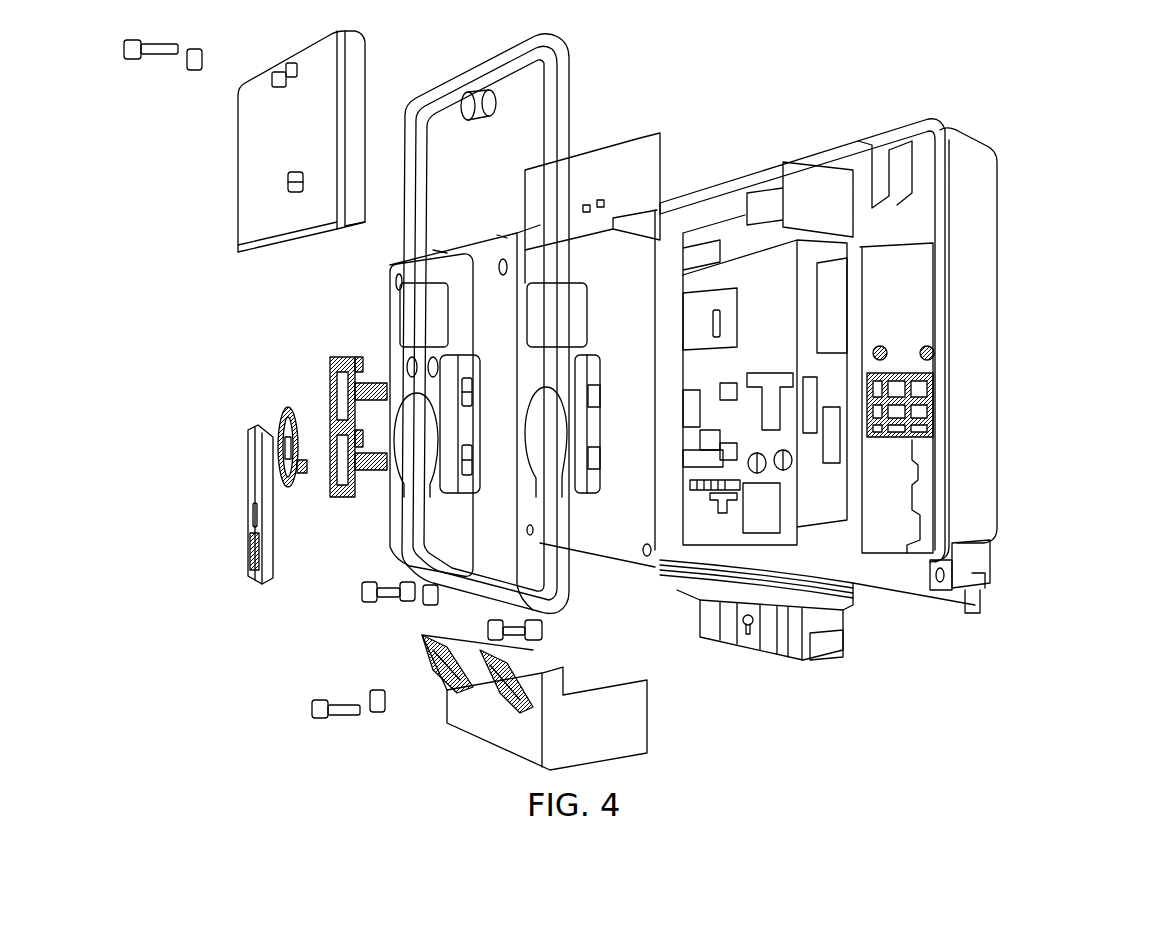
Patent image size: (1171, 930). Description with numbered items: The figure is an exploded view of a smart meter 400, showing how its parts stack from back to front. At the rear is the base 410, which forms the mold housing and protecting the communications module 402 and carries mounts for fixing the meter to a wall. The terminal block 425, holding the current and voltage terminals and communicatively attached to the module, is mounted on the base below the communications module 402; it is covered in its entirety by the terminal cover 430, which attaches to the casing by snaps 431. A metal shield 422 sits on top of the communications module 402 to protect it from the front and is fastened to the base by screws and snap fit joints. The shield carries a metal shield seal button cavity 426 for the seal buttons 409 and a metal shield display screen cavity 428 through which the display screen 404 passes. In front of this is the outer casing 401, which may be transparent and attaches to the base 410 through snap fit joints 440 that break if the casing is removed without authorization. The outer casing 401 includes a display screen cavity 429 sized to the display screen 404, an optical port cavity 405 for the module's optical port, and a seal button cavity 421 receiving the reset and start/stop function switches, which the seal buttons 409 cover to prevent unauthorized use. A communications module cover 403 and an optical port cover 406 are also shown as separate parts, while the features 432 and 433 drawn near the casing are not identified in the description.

The smart meter 400 is at (1095, 97).
The outer casing 401 is at (392, 300).
The communications module 402 is at (805, 168).
The communications module cover 403 is at (240, 150).
The display screen 404 is at (705, 308).
The optical port cavity 405 is at (403, 533).
The optical port cover 406 is at (250, 468).
The seal button 409 is at (342, 372).
The base 410 is at (998, 393).
The seal button cavity 421 is at (462, 493).
The metal shield 422 is at (626, 558).
The terminal block 425 is at (780, 648).
The metal shield seal button cavity 426 is at (590, 493).
The metal shield display screen cavity 428 is at (580, 300).
The display screen cavity 429 is at (435, 330).
The terminal cover 430 is at (500, 735).
The snaps 431 is at (473, 703).
The button 432 is at (285, 415).
The frame lip 433 is at (568, 60).
The snap fit joints 440 is at (465, 100).